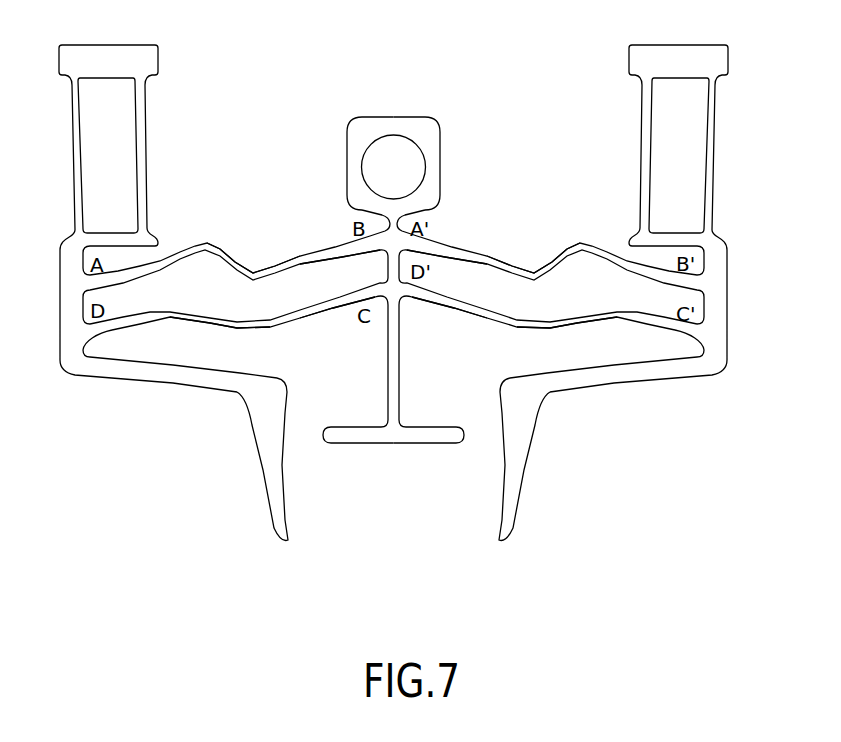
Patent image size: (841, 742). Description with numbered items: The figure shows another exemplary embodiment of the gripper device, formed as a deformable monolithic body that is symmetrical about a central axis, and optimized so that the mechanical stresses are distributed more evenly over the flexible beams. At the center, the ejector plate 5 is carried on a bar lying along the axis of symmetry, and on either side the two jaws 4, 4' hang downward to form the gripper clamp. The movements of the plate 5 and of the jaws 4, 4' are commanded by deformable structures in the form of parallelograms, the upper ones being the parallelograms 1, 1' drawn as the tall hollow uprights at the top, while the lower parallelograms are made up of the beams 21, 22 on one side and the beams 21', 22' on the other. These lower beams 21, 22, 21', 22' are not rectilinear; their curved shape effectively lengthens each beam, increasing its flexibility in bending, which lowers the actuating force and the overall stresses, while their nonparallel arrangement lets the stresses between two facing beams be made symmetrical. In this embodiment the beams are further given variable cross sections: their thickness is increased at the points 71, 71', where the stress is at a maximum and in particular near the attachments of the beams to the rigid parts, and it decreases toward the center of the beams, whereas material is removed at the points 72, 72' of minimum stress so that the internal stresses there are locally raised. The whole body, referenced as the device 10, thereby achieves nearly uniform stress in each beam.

The deformable parallelogram 1 is at (83, 147).
The deformable parallelogram 1' is at (700, 147).
The jaw 4 is at (247, 459).
The jaw 4' is at (536, 460).
The ejector plate 5 is at (413, 444).
The frame body 10 is at (60, 408).
The lower beam 21 is at (236, 235).
The lower beam 21' is at (550, 253).
The lower beam 22 is at (239, 293).
The lower beam 22' is at (548, 322).
The point of maximum stress 71 is at (340, 307).
The point of maximum stress 71' is at (460, 297).
The point of minimum stress 72 is at (235, 281).
The point of minimum stress 72' is at (556, 302).